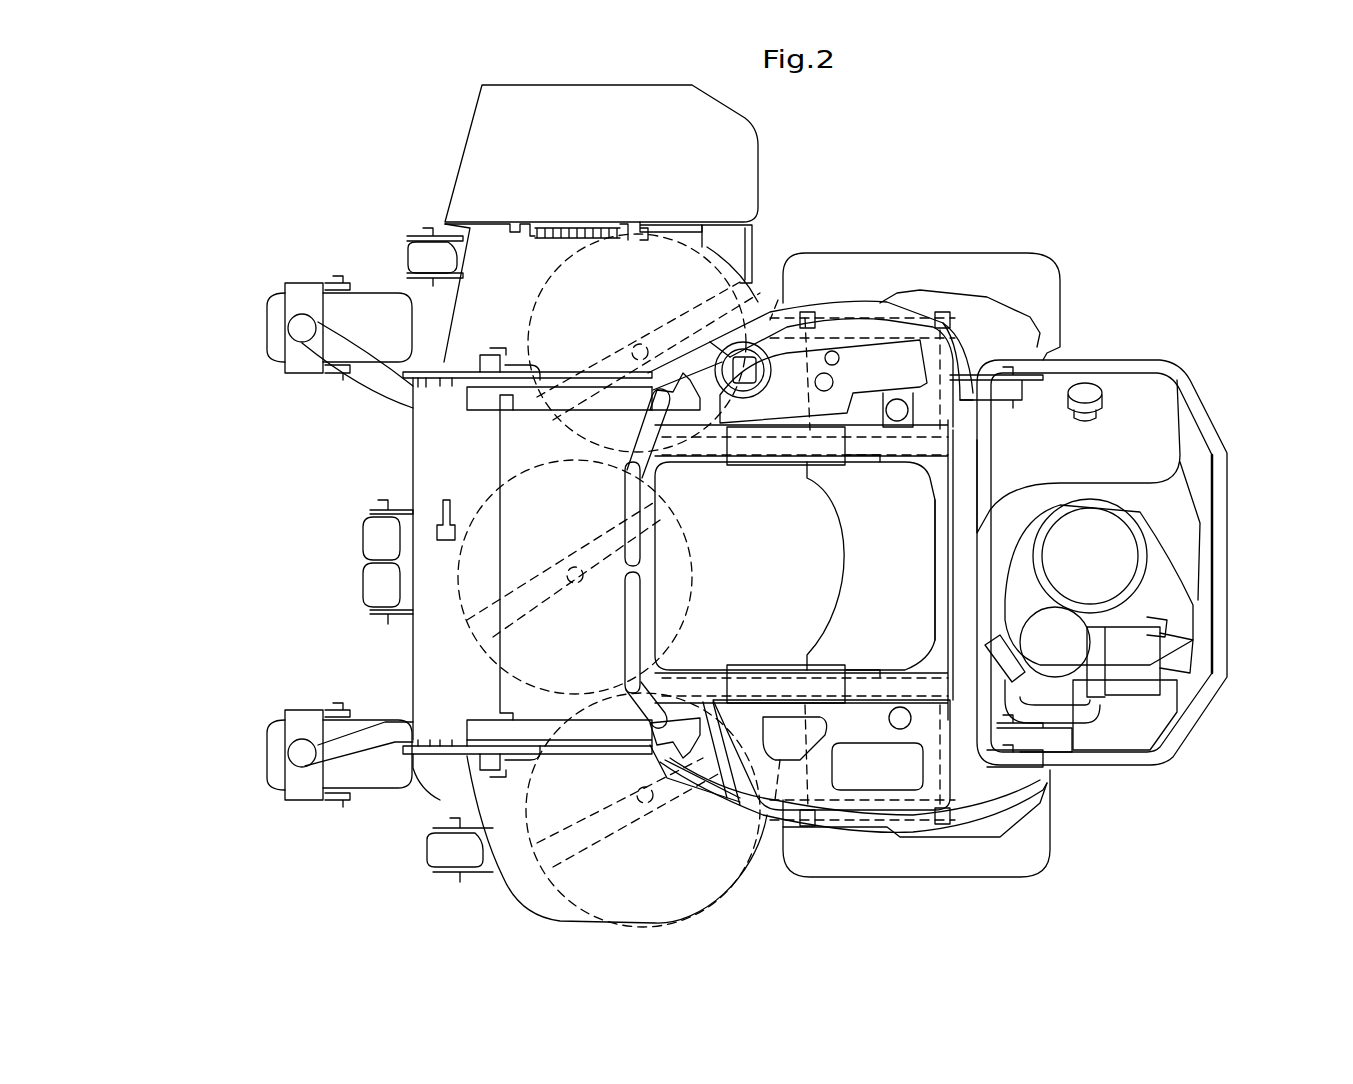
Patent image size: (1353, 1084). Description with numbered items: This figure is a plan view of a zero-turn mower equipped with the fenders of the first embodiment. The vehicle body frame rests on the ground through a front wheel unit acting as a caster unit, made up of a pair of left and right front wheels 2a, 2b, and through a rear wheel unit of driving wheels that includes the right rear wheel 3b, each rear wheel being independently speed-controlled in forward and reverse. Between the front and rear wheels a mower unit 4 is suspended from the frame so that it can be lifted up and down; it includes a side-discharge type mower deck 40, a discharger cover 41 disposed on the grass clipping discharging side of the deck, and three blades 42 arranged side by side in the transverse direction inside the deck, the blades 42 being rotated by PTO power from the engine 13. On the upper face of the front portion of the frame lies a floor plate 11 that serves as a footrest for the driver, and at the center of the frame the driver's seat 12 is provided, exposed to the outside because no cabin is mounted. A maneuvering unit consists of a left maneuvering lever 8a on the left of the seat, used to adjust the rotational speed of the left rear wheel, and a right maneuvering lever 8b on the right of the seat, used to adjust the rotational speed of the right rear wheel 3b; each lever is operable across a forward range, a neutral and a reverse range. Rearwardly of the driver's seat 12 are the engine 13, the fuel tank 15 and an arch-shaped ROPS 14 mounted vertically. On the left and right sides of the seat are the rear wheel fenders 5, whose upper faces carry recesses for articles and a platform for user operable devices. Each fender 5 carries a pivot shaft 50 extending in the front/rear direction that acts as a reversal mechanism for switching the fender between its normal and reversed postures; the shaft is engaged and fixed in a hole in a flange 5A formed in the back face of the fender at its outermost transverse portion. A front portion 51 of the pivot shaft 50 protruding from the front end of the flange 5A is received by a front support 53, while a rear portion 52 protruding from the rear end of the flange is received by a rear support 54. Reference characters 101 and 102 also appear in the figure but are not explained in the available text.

The left front wheel 2a is at (273, 753).
The right front wheel 2b is at (273, 328).
The right rear wheel 3b is at (1040, 285).
The mower unit 4 is at (462, 804).
The fender 5 is at (880, 300).
The flange 5A is at (870, 792).
The left maneuvering lever 8a is at (633, 603).
The right maneuvering lever 8b is at (627, 511).
The floor plate 11 is at (537, 702).
The driver's seat 12 is at (885, 565).
The engine 13 is at (1175, 565).
The ROPS 14 is at (965, 622).
The fuel tank 15 is at (1125, 385).
The mower deck 40 is at (500, 315).
The discharger cover 41 is at (488, 153).
The blade 42 is at (596, 352).
The pivot shaft 50 is at (812, 310).
The front portion 51 is at (778, 300).
The rear portion 52 is at (985, 305).
The front support 53 is at (806, 310).
The rear support 54 is at (940, 310).
The coupling portion 101 is at (668, 385).
The rear frame 102 is at (1205, 428).